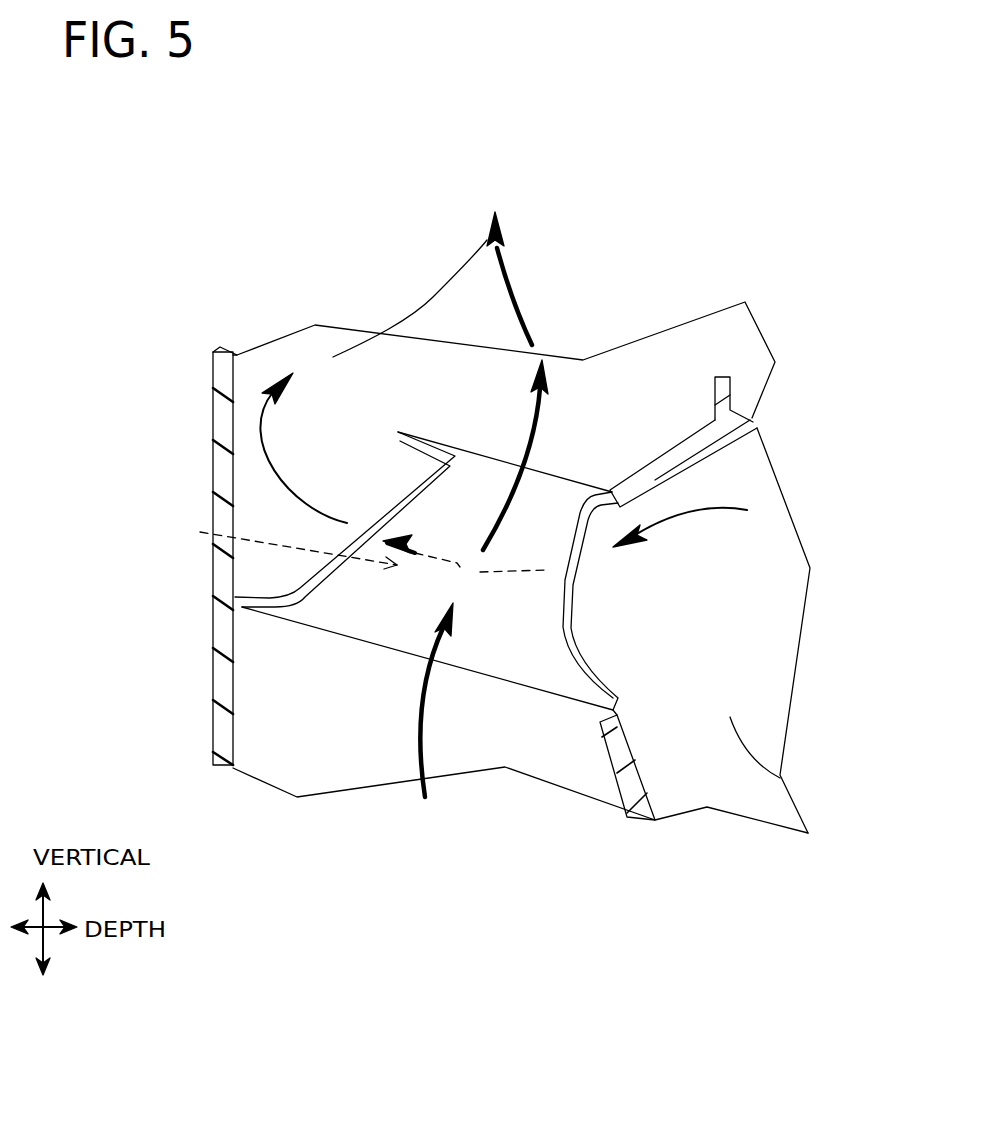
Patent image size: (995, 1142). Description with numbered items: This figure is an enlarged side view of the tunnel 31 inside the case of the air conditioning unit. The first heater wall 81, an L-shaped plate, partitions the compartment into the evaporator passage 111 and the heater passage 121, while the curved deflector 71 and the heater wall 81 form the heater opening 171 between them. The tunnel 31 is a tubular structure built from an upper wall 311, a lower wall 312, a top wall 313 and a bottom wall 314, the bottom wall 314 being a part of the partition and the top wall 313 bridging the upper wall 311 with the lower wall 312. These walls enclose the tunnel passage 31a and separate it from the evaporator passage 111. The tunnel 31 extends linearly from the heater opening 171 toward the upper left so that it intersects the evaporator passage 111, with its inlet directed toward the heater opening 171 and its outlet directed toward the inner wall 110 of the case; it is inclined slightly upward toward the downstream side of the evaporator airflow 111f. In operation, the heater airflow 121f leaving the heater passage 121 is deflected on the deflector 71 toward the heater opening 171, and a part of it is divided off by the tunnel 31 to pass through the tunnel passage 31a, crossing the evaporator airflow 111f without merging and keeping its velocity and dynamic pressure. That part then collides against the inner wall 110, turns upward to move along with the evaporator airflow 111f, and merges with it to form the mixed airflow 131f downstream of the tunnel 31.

The inner wall 110 is at (213, 475).
The first evaporator passage 111 is at (397, 757).
The first heater passage 121 is at (782, 778).
The first deflector 71 is at (753, 422).
The first heater wall 81 is at (637, 760).
The first tunnel 31 is at (463, 570).
The tunnel passage 31a is at (274, 546).
The upper wall 311 is at (530, 485).
The lower wall 312 is at (460, 650).
The top wall 313 is at (482, 530).
The bottom wall 314 is at (580, 597).
The first heater opening 171 is at (610, 590).
The mixed airflow 131f is at (483, 233).
The evaporator airflow 111f is at (538, 447).
The heater airflow 121f is at (250, 433).